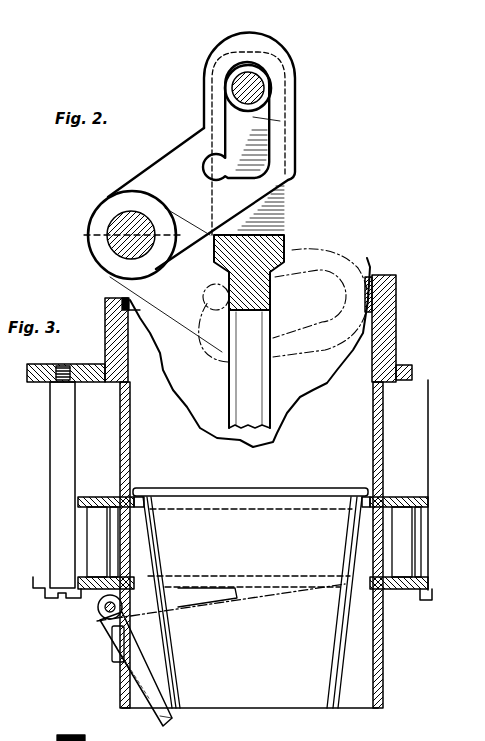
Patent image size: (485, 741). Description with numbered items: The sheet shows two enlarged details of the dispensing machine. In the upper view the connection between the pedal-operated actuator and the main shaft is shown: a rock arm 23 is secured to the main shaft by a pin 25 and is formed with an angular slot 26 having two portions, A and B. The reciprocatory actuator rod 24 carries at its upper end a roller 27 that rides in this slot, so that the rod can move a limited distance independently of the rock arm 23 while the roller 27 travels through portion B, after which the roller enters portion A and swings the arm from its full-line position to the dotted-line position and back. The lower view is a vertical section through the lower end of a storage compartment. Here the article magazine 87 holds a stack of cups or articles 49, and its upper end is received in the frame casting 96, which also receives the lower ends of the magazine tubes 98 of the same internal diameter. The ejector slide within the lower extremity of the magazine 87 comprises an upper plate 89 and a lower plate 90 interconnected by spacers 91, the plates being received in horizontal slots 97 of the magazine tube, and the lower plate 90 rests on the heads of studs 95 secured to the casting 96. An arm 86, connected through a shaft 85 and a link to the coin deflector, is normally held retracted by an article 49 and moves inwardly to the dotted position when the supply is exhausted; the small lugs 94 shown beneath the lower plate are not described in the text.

In FIG. 2, the rock arm 23 is at (340, 250).
In FIG. 2, the actuator rod 24 is at (249, 331).
In FIG. 2, the pin 25 is at (88, 237).
In FIG. 2, the angular slot 26 is at (212, 165).
In FIG. 2, the roller 27 is at (264, 70).
In FIG. 3, the article or cup 49 is at (250, 598).
In FIG. 3, the shaft 85 is at (98, 626).
In FIG. 3, the arm 86 is at (168, 724).
In FIG. 3, the article magazine 87 is at (386, 455).
In FIG. 3, the upper plate 89 is at (118, 497).
In FIG. 3, the lower plate 90 is at (108, 597).
In FIG. 3, the spacers 91 is at (254, 542).
In FIG. 3, the bracket lug 94 is at (53, 598).
In FIG. 3, the studs 95 is at (58, 425).
In FIG. 3, the frame casting 96 is at (52, 372).
In FIG. 3, the horizontal slots 97 is at (260, 505).
In FIG. 3, the magazine tubes 98 is at (372, 277).